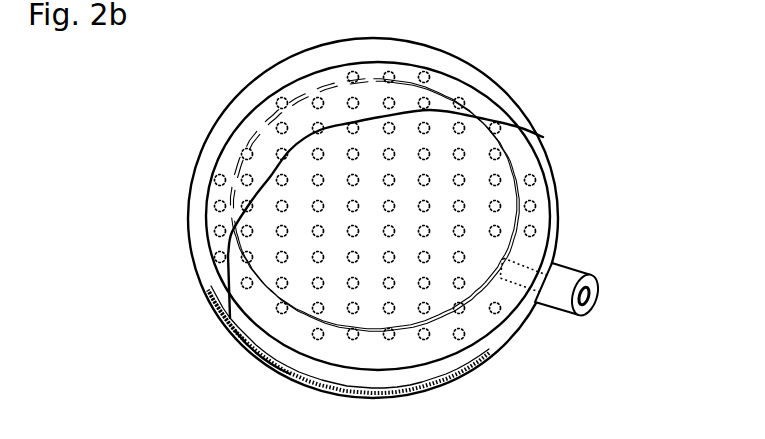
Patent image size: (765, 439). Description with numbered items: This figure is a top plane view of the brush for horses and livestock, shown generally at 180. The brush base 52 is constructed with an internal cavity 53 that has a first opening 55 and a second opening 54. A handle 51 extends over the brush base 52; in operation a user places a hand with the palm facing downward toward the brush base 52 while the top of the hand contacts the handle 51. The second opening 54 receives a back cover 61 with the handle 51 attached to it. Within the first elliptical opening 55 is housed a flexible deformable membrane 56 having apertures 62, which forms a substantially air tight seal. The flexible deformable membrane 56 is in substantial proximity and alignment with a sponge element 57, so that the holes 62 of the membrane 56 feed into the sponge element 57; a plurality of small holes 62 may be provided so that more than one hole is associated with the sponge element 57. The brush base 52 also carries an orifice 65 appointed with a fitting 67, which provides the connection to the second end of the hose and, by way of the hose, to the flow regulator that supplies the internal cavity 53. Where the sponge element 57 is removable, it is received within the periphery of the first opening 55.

The top plane view of the brush 180 is at (153, 135).
The handle 51 is at (480, 75).
The brush base 52 is at (483, 350).
The internal cavity 53 is at (548, 198).
The second opening 54 is at (283, 110).
The first opening 55 is at (280, 373).
The flexible deformable membrane 56 is at (527, 210).
The sponge element 57 is at (223, 335).
The back cover 61 is at (543, 137).
The apertures 62 is at (282, 252).
The orifice 65 is at (595, 300).
The fitting 67 is at (590, 305).